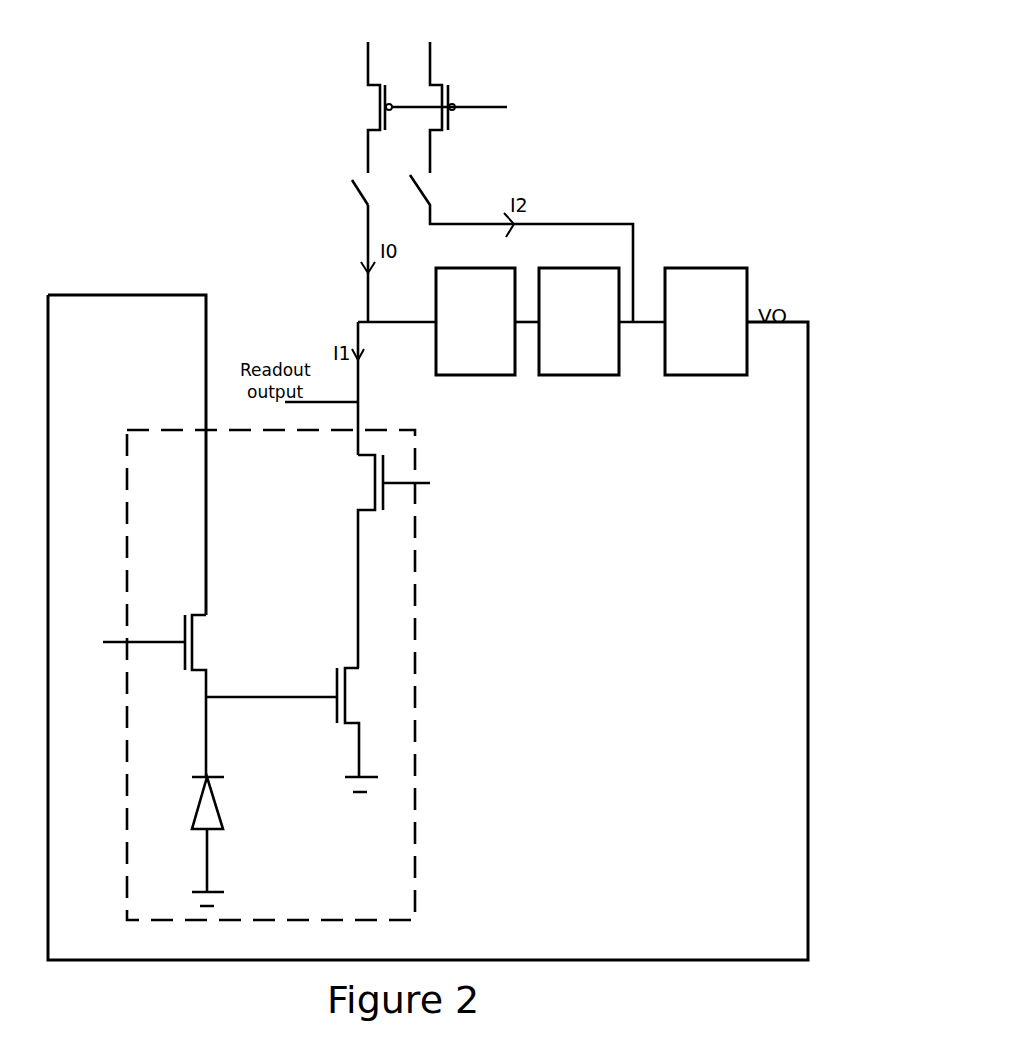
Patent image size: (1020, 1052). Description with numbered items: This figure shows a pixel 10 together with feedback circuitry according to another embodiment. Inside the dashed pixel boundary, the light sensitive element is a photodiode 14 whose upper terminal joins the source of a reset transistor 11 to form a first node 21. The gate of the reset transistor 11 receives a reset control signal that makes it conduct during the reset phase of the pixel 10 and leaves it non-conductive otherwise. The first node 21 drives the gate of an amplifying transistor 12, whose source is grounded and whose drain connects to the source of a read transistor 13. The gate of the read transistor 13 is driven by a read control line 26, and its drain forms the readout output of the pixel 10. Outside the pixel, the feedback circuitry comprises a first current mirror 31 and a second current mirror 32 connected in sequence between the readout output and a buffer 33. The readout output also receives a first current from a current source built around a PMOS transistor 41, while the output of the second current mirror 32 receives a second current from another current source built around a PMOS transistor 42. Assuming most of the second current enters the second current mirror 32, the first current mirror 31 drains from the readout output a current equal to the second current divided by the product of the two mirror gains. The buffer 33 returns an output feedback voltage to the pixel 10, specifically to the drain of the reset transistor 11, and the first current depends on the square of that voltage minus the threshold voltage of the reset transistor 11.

The PMOS transistor M4 41 is at (409, 107).
The PMOS transistor M5 42 is at (467, 107).
The first current mirror 31 is at (487, 321).
The second current mirror 32 is at (602, 321).
The buffer 33 is at (706, 321).
The pixel 10 is at (390, 906).
The read transistor M3 13 is at (360, 561).
The read control line 26 is at (438, 509).
The reset transistor M1 11 is at (138, 672).
The first node 21 is at (208, 697).
The amplifying transistor M2 12 is at (358, 730).
The photodiode D1 14 is at (251, 841).